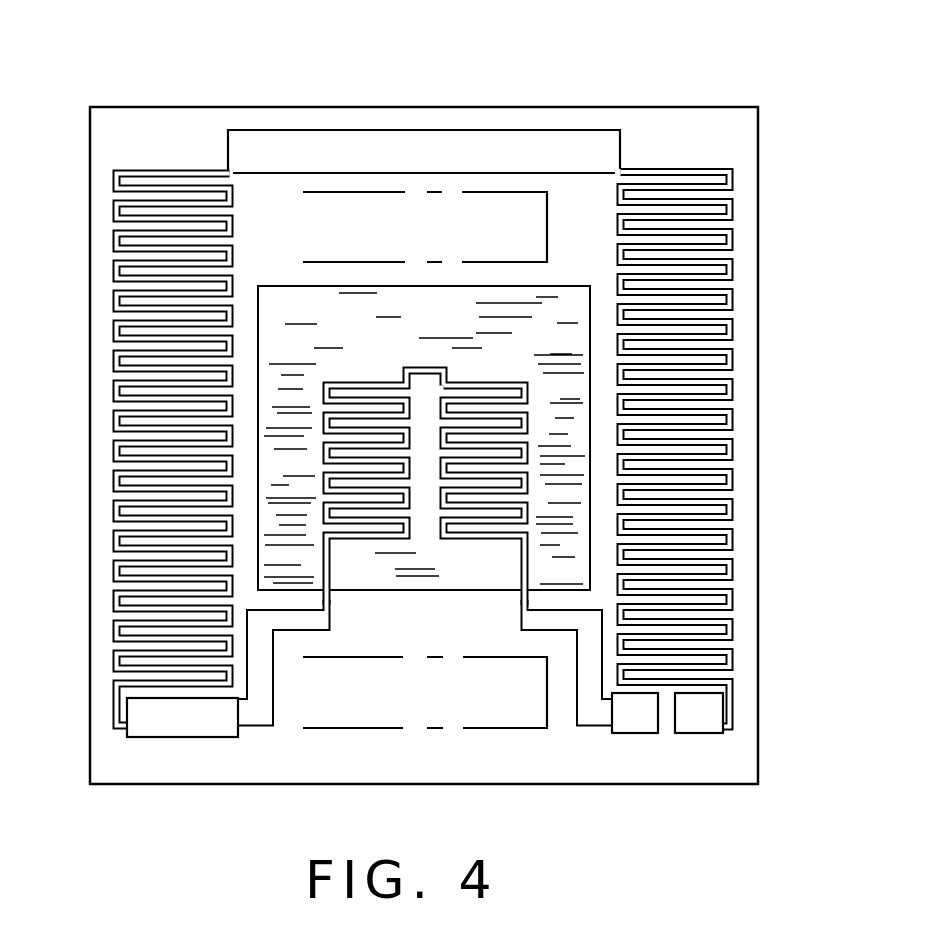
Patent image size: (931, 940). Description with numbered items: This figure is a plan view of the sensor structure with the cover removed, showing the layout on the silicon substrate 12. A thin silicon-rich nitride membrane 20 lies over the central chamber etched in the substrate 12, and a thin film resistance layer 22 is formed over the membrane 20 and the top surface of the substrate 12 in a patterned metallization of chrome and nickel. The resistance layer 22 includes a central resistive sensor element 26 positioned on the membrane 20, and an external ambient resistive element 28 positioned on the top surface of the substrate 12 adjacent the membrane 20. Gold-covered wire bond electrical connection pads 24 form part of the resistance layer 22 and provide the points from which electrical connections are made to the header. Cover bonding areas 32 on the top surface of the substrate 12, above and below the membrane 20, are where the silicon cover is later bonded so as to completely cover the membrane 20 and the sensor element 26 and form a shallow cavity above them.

The silicon substrate 12 is at (393, 762).
The silicon-rich nitride membrane 20 is at (436, 562).
The thin film resistance layer 22 is at (163, 155).
The wire bond electrical connection pads 24 is at (203, 722).
The central resistive sensor element 26 is at (382, 381).
The external ambient resistive element 28 is at (115, 447).
The cover bonding areas 32 is at (303, 236).